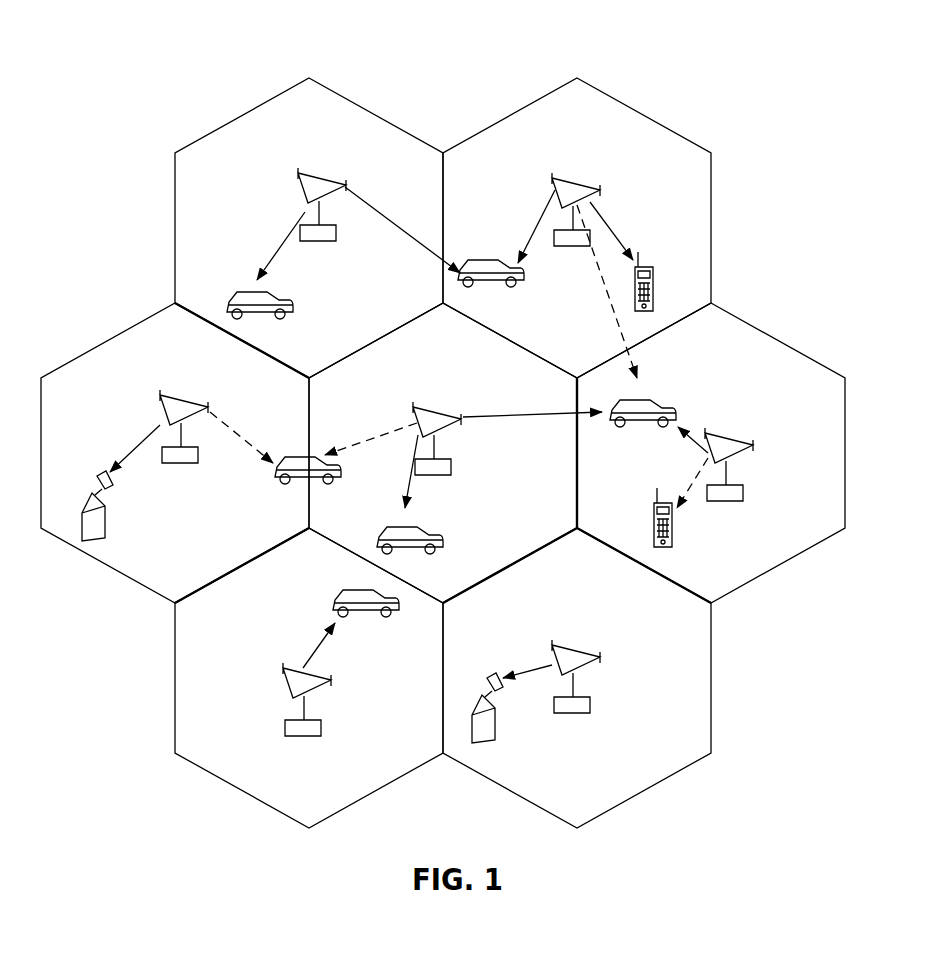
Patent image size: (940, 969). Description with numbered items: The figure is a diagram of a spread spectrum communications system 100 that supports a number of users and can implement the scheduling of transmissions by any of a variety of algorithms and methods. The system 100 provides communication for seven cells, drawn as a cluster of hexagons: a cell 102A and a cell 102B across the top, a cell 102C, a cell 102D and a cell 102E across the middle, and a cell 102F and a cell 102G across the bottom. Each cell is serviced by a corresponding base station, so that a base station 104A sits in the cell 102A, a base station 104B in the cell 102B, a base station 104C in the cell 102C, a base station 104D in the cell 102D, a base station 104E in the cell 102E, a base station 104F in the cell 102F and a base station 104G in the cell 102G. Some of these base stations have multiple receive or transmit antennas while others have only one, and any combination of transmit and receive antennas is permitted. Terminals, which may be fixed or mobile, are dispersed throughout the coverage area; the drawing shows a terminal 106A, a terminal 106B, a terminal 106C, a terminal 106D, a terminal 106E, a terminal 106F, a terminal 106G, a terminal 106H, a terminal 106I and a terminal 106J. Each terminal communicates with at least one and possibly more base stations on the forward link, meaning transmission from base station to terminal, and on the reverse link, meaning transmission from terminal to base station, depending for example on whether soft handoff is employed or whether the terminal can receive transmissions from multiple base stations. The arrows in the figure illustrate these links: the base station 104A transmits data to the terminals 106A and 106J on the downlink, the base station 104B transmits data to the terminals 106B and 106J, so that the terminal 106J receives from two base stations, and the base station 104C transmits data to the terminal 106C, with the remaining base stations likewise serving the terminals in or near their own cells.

The communications system 100 is at (764, 66).
The cell 102A is at (250, 111).
The cell 102B is at (638, 112).
The cell 102C is at (102, 344).
The cell 102D is at (469, 332).
The cell 102E is at (845, 448).
The cell 102F is at (177, 684).
The cell 102G is at (711, 660).
The base station 104A is at (304, 173).
The base station 104B is at (559, 178).
The base station 104C is at (168, 396).
The base station 104D is at (421, 407).
The base station 104E is at (713, 436).
The base station 104F is at (286, 668).
The base station 104G is at (560, 648).
The terminal 106A is at (253, 290).
The terminal 106B is at (641, 264).
The terminal 106C is at (98, 474).
The terminal 106D is at (408, 526).
The terminal 106E is at (647, 399).
The terminal 106F is at (358, 589).
The terminal 106G is at (488, 678).
The terminal 106H is at (297, 457).
The terminal 106I is at (657, 504).
The terminal 106J is at (496, 262).